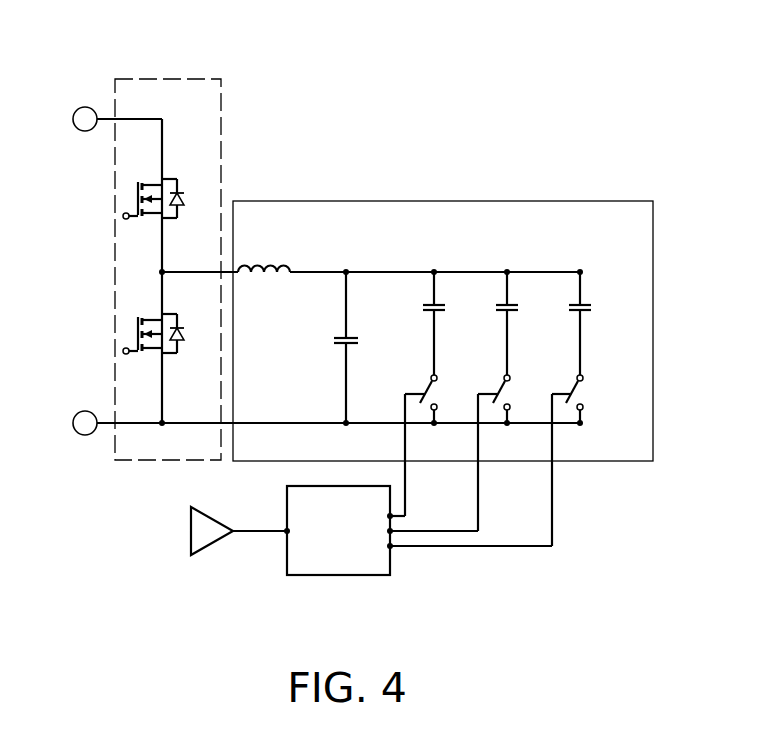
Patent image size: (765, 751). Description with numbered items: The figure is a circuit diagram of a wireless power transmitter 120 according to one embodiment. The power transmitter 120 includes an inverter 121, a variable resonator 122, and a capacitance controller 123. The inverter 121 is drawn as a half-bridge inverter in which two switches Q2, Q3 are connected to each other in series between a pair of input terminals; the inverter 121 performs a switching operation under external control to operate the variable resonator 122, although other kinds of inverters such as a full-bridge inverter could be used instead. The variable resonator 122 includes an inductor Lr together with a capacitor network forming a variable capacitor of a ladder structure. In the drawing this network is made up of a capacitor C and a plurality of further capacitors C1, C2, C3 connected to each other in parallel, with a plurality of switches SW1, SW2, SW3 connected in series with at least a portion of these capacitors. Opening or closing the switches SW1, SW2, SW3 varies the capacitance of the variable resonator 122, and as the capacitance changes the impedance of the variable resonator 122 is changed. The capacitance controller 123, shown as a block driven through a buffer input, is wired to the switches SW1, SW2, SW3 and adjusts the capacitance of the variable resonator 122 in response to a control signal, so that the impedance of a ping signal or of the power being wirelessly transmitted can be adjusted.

The power transmitter 120 is at (417, 95).
The inverter 121 is at (182, 79).
The variable resonator 122 is at (562, 202).
The capacitance controller 123 is at (336, 575).
The switch Q2 is at (168, 192).
The switch Q3 is at (168, 327).
The inductor Lr is at (264, 254).
The capacitor C is at (354, 347).
The capacitor C1 is at (450, 323).
The capacitor C2 is at (523, 323).
The capacitor C3 is at (596, 323).
The switch SW1 is at (446, 436).
The switch SW2 is at (519, 444).
The switch SW3 is at (593, 451).